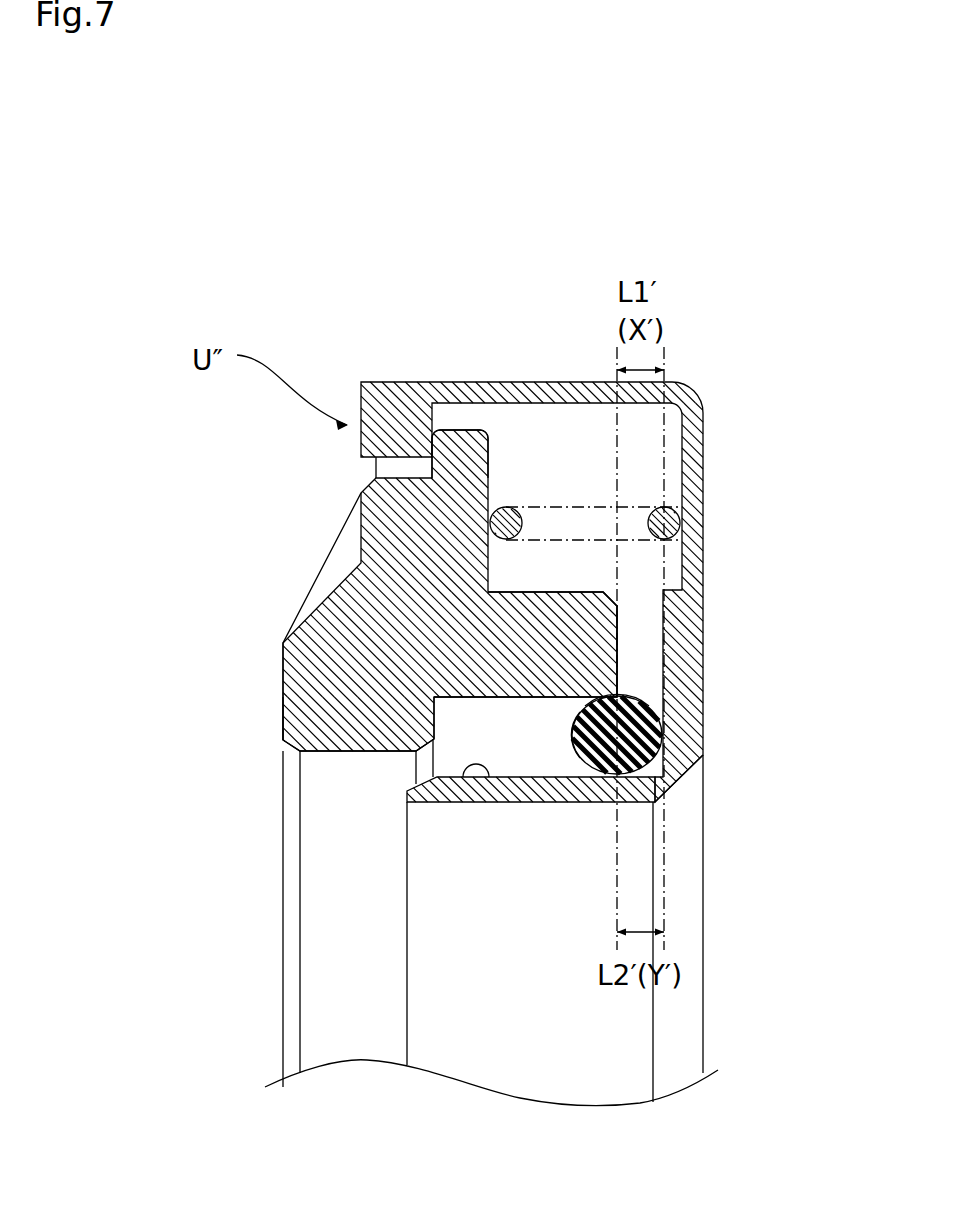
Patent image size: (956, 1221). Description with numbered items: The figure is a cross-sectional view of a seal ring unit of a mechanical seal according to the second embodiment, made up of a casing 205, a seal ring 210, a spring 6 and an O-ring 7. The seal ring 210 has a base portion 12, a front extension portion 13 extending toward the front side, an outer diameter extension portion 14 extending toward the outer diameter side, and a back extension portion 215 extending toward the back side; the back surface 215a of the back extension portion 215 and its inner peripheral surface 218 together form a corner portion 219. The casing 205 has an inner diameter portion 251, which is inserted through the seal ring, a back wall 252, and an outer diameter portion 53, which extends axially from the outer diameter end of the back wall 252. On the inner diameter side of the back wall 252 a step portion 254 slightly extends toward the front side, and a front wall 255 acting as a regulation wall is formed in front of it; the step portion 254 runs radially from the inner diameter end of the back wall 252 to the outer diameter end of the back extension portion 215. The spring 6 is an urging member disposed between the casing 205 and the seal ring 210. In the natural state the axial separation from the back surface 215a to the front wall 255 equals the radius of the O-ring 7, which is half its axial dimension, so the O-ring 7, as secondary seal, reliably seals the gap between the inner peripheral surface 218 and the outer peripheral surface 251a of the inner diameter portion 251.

The casing 205 is at (697, 375).
The outer diameter portion 53 is at (503, 394).
The back wall 252 is at (688, 537).
The step portion 254 is at (681, 618).
The front wall 255 is at (693, 760).
The base portion 12 is at (348, 650).
The outer diameter extension portion 14 is at (463, 438).
The front extension portion 13 is at (342, 713).
The back extension portion 215 is at (585, 642).
The back surface 215a is at (620, 657).
The seal ring 210 is at (278, 655).
The inner peripheral surface 218 is at (657, 742).
The corner portion 219 is at (622, 704).
The O-ring 7 is at (571, 733).
The spring 6 is at (578, 508).
The inner diameter portion 251 is at (560, 790).
The outer peripheral surface 251a is at (463, 768).